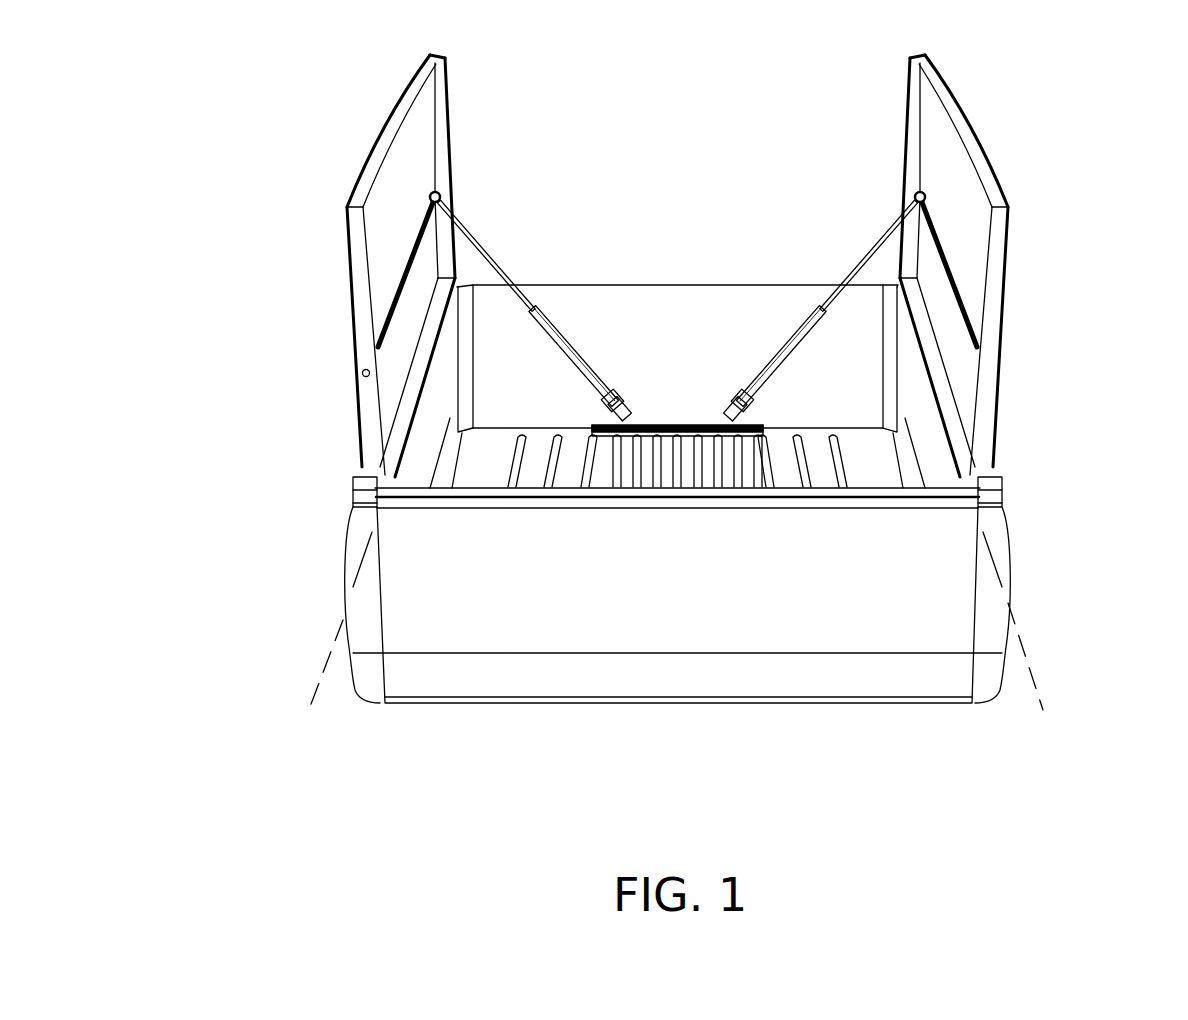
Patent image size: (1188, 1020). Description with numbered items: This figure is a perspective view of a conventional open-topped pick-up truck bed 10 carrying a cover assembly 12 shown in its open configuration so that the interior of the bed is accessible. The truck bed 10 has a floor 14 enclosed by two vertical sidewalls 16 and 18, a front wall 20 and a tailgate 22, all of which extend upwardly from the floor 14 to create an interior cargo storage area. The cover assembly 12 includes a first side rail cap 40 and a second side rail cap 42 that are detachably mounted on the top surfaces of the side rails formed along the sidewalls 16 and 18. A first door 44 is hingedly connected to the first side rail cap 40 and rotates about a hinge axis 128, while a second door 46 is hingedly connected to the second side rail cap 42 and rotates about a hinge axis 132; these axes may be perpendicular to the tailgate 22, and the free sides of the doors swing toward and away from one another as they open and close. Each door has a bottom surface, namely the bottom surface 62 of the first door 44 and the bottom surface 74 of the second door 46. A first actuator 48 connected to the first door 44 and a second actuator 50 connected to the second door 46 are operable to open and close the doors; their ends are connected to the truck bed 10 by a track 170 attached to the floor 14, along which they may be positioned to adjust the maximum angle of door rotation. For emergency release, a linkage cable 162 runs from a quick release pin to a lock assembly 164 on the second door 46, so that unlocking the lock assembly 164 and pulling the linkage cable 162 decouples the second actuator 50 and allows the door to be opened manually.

The truck bed 10 is at (926, 715).
The cover assembly 12 is at (1015, 153).
The floor 14 is at (862, 435).
The sidewall 16 is at (998, 553).
The sidewall 18 is at (350, 568).
The front wall 20 is at (693, 290).
The tailgate 22 is at (467, 632).
The first side rail cap 40 is at (993, 493).
The second side rail cap 42 is at (353, 487).
The first door 44 is at (995, 312).
The second door 46 is at (363, 258).
The first actuator 48 is at (866, 253).
The second actuator 50 is at (492, 254).
The bottom surface 62 is at (977, 213).
The bottom surface 74 is at (420, 218).
The hinge axis 128 is at (1040, 680).
The hinge axis 132 is at (320, 678).
The linkage cable 162 is at (392, 305).
The lock assembly 164 is at (361, 375).
The track 170 is at (662, 420).